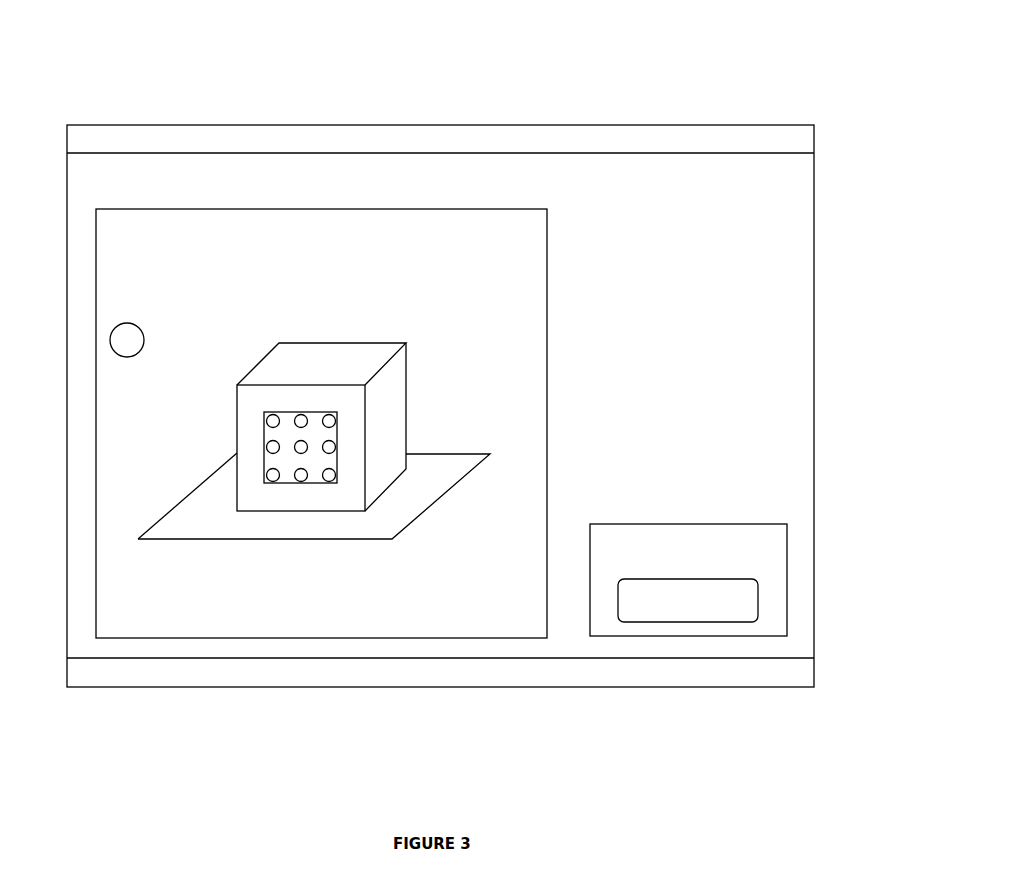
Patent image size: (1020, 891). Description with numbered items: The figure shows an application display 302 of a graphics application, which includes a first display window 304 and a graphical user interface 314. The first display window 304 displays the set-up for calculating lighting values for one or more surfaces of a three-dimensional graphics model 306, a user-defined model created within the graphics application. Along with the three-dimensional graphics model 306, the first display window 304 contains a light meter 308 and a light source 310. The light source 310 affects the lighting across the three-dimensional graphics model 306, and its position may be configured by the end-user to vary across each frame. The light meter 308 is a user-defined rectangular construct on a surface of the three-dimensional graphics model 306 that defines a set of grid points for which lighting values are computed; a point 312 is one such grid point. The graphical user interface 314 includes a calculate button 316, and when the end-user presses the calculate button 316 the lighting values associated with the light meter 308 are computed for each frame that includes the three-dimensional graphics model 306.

The application display 302 is at (252, 127).
The first display window 304 is at (322, 208).
The 3-D graphics model 306 is at (340, 343).
The light meter 308 is at (278, 413).
The light source 310 is at (125, 323).
The point 312 is at (308, 447).
The graphical user interface 314 is at (647, 524).
The calculate button 316 is at (716, 622).